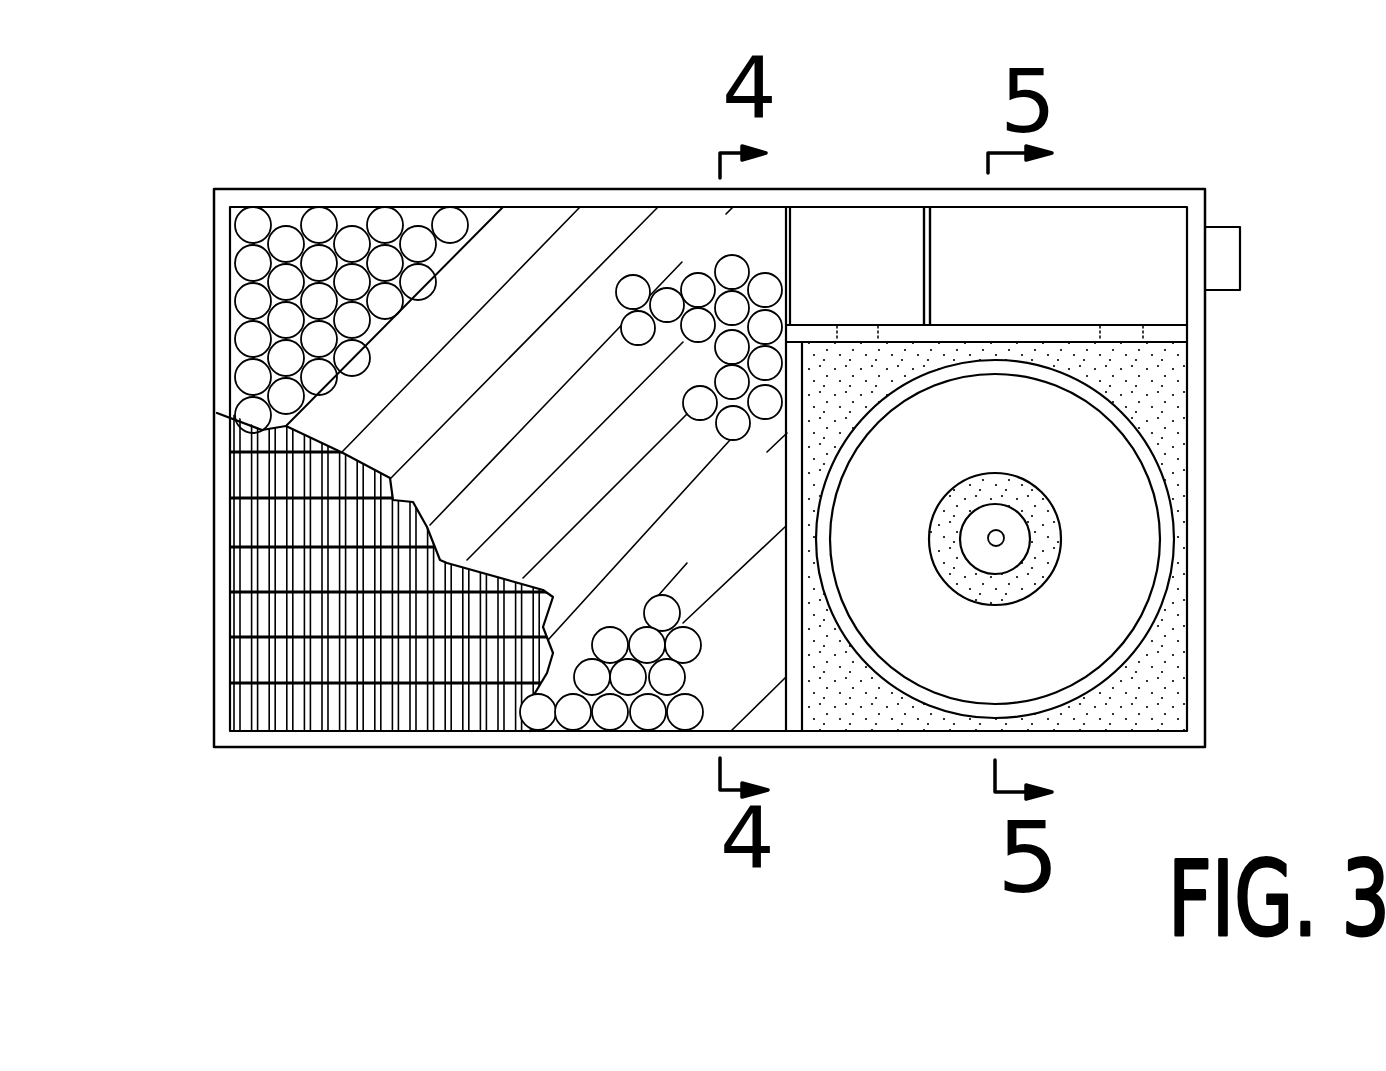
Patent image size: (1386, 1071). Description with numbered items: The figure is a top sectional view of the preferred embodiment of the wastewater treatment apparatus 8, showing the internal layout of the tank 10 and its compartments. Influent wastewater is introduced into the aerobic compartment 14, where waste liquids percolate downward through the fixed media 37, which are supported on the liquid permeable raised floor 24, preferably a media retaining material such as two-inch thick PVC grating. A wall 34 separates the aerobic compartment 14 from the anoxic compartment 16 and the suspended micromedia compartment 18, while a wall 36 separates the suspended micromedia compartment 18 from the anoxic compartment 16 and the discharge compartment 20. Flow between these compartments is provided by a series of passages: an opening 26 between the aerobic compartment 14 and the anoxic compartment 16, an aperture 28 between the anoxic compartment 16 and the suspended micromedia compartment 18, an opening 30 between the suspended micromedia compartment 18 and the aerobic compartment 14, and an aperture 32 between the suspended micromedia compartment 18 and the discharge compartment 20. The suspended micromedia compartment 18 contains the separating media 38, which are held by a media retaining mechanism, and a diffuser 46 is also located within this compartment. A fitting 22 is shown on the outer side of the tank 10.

The photocopier apparatus 8 is at (1262, 453).
The tank 10 is at (1205, 370).
The aerobic compartment 14 is at (642, 467).
The anoxic compartment 16 is at (908, 253).
The suspended micromedia compartment 18 is at (1010, 440).
The discharge compartment 20 is at (1068, 289).
The side tab / connector 22 is at (1225, 265).
The raised floor 24 is at (475, 698).
The opening 26 is at (780, 263).
The aperture 28 is at (855, 336).
The opening 30 is at (785, 627).
The aperture 32 is at (1117, 335).
The wall 34 is at (736, 503).
The wall 36 is at (903, 335).
The fixed media 37 is at (247, 262).
The separating media 38 is at (1157, 667).
The diffuser 46 is at (1013, 547).